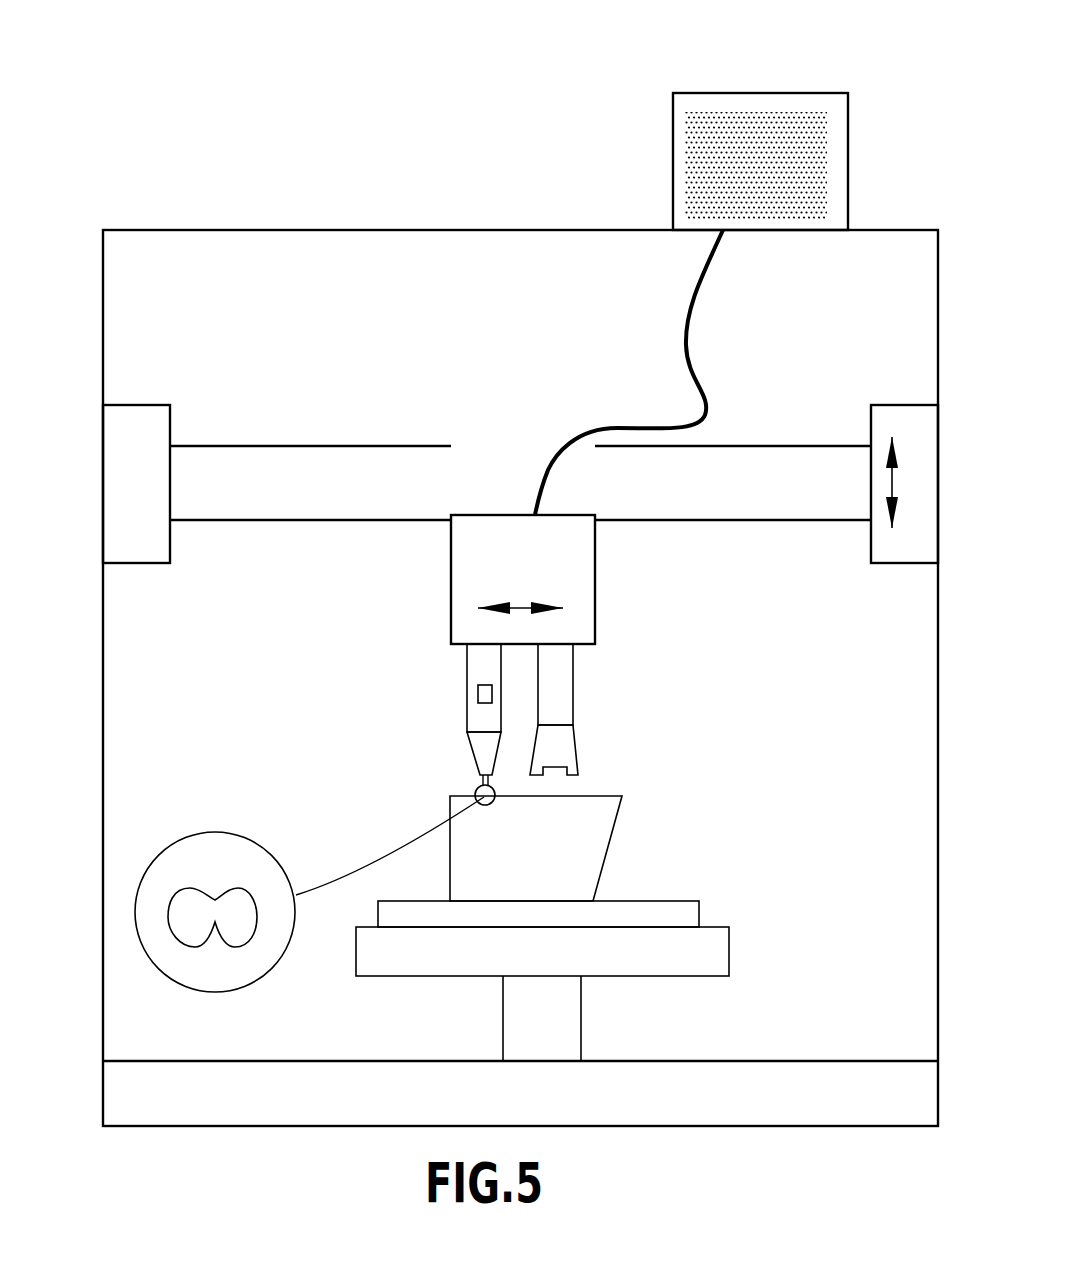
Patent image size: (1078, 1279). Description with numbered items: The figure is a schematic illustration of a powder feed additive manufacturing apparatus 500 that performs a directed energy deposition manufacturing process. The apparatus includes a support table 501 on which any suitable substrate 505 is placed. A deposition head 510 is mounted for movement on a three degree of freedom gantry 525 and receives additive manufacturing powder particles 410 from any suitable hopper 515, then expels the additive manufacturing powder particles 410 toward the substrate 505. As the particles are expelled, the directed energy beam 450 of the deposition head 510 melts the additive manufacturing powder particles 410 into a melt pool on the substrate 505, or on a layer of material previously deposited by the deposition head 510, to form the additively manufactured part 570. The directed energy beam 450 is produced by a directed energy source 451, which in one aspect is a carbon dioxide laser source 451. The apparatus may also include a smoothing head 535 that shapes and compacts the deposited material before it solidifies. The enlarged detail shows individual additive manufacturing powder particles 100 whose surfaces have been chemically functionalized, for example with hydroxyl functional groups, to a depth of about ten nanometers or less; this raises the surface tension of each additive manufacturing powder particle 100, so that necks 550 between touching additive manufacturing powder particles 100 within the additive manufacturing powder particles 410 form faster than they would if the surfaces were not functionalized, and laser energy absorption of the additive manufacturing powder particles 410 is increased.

The powder feed additive manufacturing apparatus 500 is at (222, 62).
The additive manufacturing powder particles 410 is at (780, 116).
The hopper 515 is at (673, 152).
The three degree of freedom gantry 525 is at (325, 446).
The directed energy source 451 is at (478, 693).
The deposition head 510 is at (470, 750).
The directed energy beam 450 is at (480, 788).
The smoothing head 535 is at (568, 745).
The additively manufactured part 570 is at (603, 832).
The substrate 505 is at (690, 912).
The support table 501 is at (718, 952).
The necks 550 is at (215, 897).
The additive manufacturing powder particle 100 is at (172, 907).